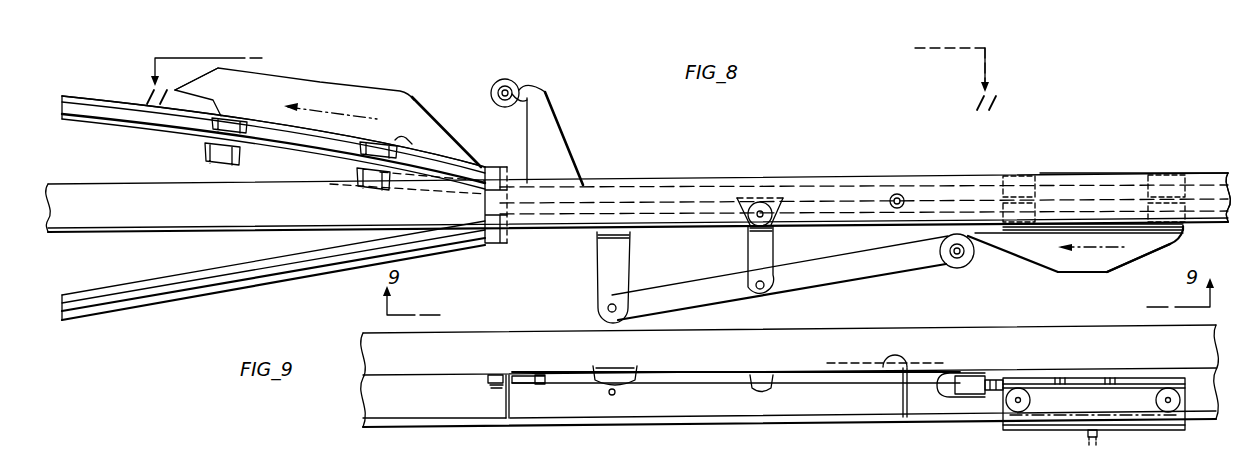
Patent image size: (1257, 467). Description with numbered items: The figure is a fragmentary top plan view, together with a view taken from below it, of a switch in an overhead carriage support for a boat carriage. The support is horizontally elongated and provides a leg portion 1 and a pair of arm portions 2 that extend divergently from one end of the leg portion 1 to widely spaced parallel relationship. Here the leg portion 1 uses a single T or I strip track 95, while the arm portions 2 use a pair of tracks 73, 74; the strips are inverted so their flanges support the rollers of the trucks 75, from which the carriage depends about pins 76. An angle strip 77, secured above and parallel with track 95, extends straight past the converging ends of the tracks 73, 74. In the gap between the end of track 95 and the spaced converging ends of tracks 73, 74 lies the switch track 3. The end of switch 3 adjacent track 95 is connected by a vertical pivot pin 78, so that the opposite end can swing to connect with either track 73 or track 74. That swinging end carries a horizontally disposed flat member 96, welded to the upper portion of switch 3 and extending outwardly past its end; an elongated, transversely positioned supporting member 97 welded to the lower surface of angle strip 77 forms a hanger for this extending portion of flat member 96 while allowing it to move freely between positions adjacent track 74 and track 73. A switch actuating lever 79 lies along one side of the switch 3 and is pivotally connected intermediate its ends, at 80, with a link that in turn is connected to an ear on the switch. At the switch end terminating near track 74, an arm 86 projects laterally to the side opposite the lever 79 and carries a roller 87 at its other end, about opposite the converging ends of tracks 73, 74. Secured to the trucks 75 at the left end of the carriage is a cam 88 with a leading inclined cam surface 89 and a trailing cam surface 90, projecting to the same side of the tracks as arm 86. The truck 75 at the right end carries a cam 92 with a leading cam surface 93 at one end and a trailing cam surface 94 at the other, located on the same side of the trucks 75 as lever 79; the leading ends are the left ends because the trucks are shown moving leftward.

In FIG. 8, the leg portion 1 is at (1081, 157).
In FIG. 8, the arm portions 2 is at (95, 88).
In FIG. 8, the switch track 3 is at (703, 190).
In FIG. 8, the track 73 is at (178, 297).
In FIG. 8, the track 74 is at (109, 126).
In FIG. 8, the trucks 75 is at (1055, 272).
In FIG. 9, the trucks 75 is at (1012, 433).
In FIG. 9, the pins 76 is at (1097, 440).
In FIG. 8, the angle strip 77 is at (993, 183).
In FIG. 8, the vertical pivot pin 78 is at (897, 194).
In FIG. 8, the switch actuating lever 79 is at (862, 266).
In FIG. 8, the pivot connection 80 is at (757, 283).
In FIG. 8, the arm 86 is at (553, 140).
In FIG. 8, the roller 87 is at (511, 82).
In FIG. 9, the roller 87 is at (750, 411).
In FIG. 8, the cam 88 is at (334, 94).
In FIG. 8, the leading inclined cam surface 89 is at (194, 80).
In FIG. 8, the trailing cam surface 90 is at (443, 124).
In FIG. 8, the cam 92 is at (1085, 262).
In FIG. 8, the leading cam surface 93 is at (1028, 263).
In FIG. 8, the trailing cam surface 94 is at (1170, 250).
In FIG. 8, the track 95 is at (1232, 185).
In FIG. 9, the track 95 is at (945, 397).
In FIG. 9, the flat member 96 is at (526, 382).
In FIG. 8, the supporting member 97 is at (493, 164).
In FIG. 9, the supporting member 97 is at (488, 380).